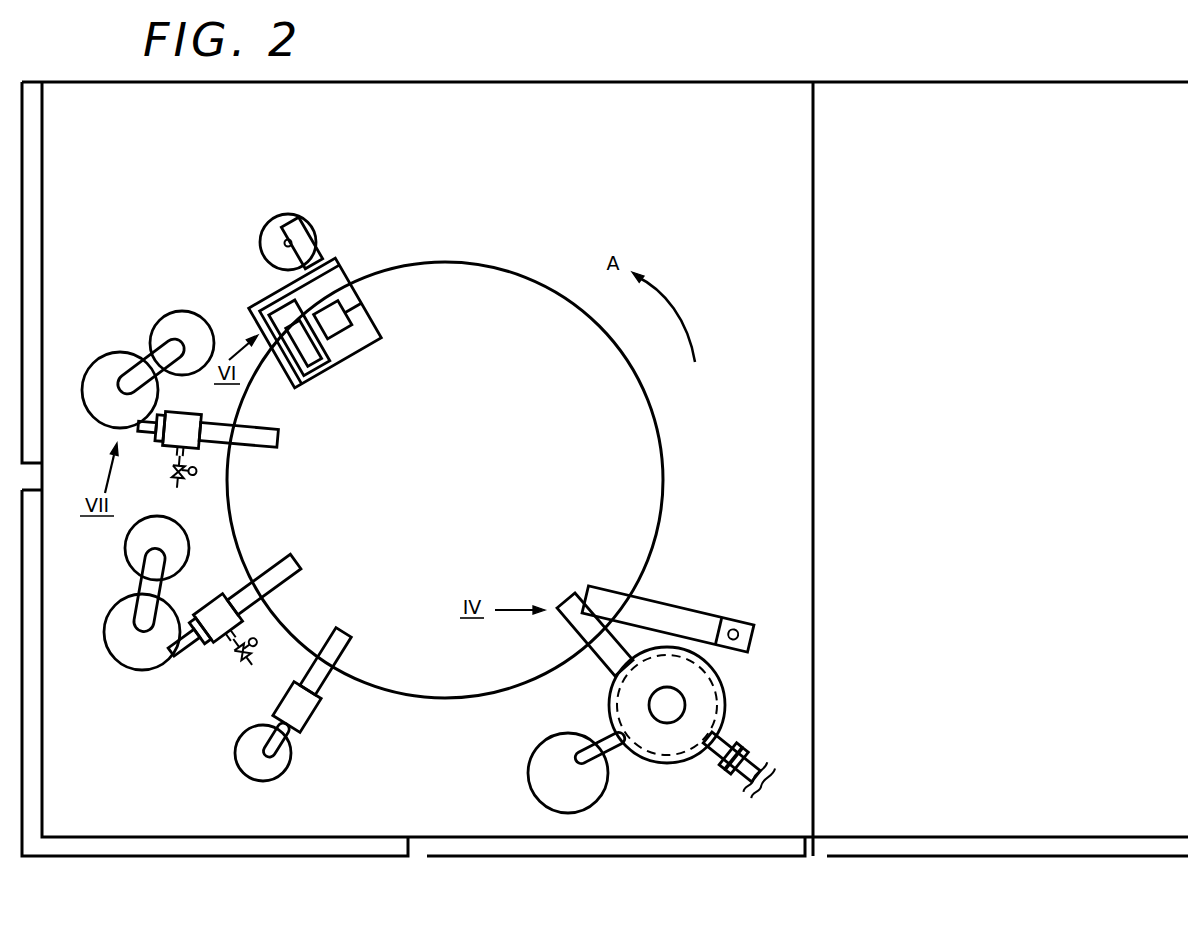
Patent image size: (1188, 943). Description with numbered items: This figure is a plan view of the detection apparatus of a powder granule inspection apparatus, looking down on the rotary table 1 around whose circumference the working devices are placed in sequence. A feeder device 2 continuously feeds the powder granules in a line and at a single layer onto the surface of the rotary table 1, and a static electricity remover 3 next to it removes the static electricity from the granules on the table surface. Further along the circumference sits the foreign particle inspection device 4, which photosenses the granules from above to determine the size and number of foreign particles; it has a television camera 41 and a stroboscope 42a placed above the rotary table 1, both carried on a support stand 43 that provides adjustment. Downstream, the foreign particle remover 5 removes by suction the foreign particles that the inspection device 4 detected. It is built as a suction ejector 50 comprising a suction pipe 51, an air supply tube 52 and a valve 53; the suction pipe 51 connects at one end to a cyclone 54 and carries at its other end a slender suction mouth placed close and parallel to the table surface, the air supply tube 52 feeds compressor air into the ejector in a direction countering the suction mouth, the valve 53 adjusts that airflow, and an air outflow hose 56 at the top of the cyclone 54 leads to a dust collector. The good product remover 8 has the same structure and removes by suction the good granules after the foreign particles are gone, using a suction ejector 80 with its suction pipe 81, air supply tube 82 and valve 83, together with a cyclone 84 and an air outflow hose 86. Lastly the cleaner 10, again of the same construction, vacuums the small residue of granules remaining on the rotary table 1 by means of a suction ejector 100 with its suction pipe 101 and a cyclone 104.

The rotary table 1 is at (656, 447).
The feeder device 2 is at (597, 672).
The static electricity remover 3 is at (697, 622).
The foreign particle inspection device 4 is at (332, 283).
The foreign particle remover 5 is at (134, 344).
The good product remover 8 is at (125, 639).
The cleaner 10 is at (306, 715).
The television camera 41 is at (368, 318).
The stroboscope light 42a is at (357, 345).
The support stand 43 is at (273, 232).
The suction ejector 50 is at (214, 457).
The suction pipe 51 is at (272, 447).
The air supply tube 52 is at (176, 478).
The valve 53 is at (190, 481).
The cyclone 54 is at (105, 372).
The air outflow hose 56 is at (178, 336).
The suction ejector 80 is at (259, 629).
The suction pipe 81 is at (300, 572).
The air supply tube 82 is at (250, 672).
The valve 83 is at (235, 652).
The cyclone 84 is at (115, 652).
The air outflow hose 86 is at (140, 582).
The suction ejector 100 is at (330, 717).
The suction pipe 101 is at (350, 651).
The cyclone 104 is at (240, 752).